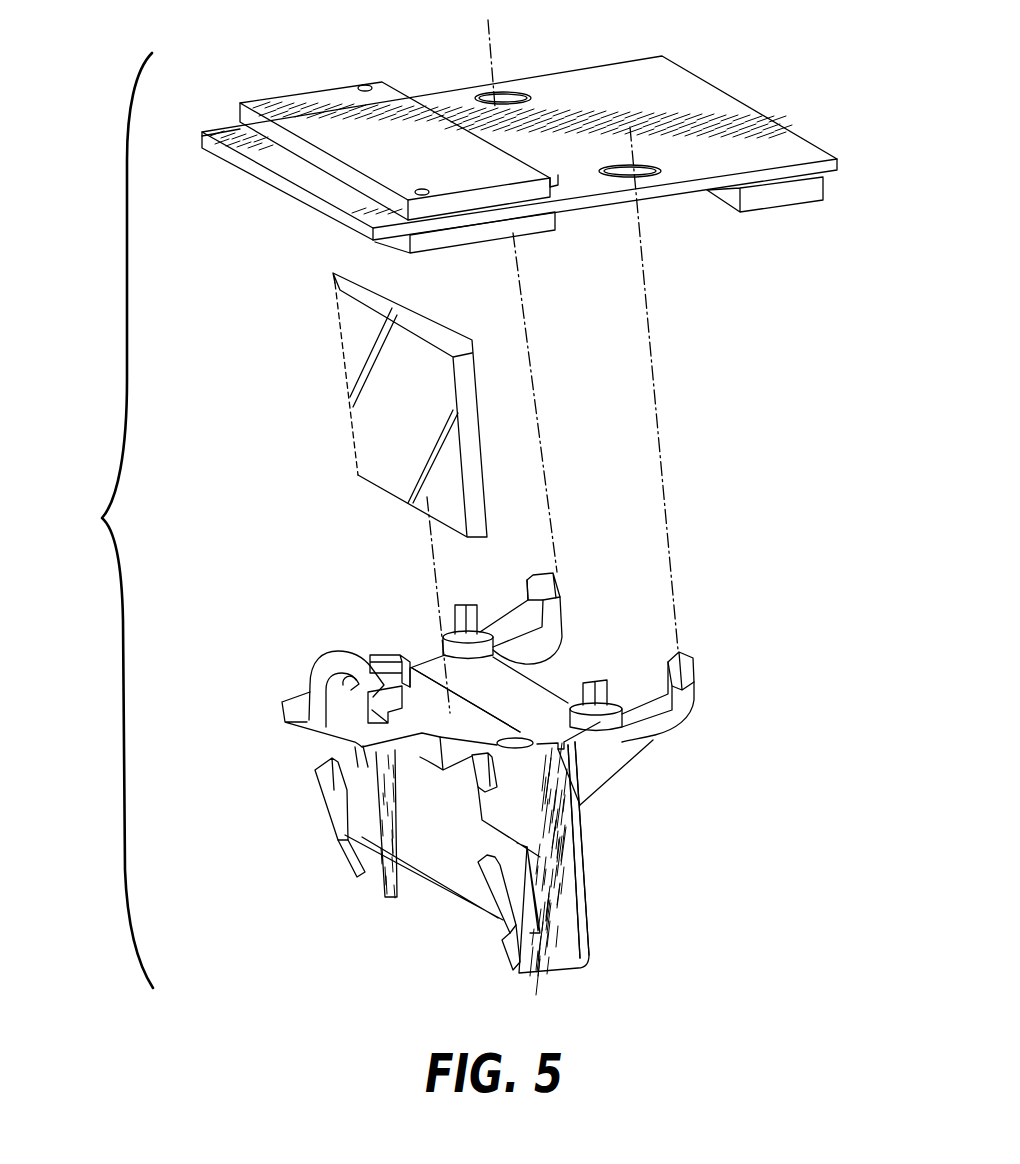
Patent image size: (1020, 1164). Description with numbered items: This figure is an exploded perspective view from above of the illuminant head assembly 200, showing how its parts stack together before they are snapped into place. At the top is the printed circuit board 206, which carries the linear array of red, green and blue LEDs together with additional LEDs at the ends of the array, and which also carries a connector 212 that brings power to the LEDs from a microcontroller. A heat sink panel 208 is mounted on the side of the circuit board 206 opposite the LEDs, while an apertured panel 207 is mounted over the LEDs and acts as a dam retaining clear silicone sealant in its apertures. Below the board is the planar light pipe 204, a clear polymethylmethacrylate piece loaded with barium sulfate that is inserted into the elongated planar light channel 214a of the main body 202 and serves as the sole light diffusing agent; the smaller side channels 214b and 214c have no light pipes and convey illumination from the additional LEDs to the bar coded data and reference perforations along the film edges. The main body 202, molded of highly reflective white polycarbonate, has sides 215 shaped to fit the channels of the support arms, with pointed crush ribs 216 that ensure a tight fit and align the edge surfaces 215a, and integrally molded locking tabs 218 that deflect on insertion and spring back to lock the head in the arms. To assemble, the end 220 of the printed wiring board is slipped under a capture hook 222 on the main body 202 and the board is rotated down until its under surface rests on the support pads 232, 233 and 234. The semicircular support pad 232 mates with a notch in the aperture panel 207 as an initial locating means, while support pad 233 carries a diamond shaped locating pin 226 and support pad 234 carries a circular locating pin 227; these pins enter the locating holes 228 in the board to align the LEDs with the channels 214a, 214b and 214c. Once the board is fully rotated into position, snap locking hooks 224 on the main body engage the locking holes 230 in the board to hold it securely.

The illuminant head assembly 200 is at (100, 520).
The main body 202 is at (590, 873).
The planar light pipe 204 is at (352, 422).
The printed circuit board 206 is at (680, 202).
The apertured panel 207 is at (485, 245).
The heat sink panel 208 is at (330, 90).
The connector 212 is at (793, 207).
The elongated planar light channel 214a is at (428, 688).
The side channel 214b is at (563, 752).
The side channel 214c is at (372, 657).
The sides of the main body 215 is at (567, 907).
The edge surface 215a is at (573, 895).
The pointed crush rib 216 is at (340, 840).
The locking tab 218 is at (317, 773).
The end of the printed wiring board 220 is at (277, 190).
The capture hook 222 is at (308, 673).
The snap locking hook 224 is at (550, 580).
The diamond shaped locating pin 226 is at (462, 603).
The circular locating pin 227 is at (593, 680).
The locating hole 228 is at (432, 110).
The locking hole 230 is at (510, 97).
The support pad 232 is at (392, 710).
The support pad 233 is at (507, 630).
The support pad 234 is at (630, 703).